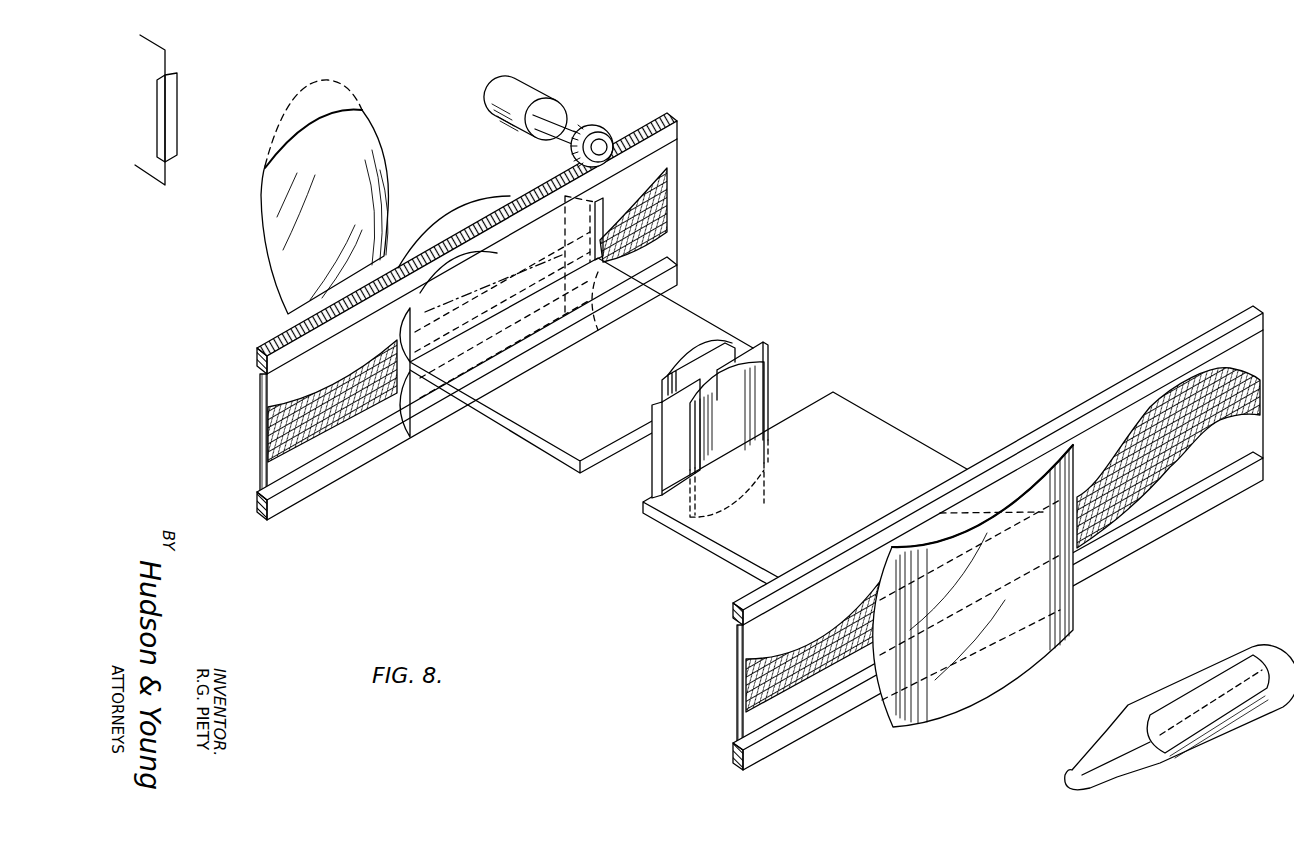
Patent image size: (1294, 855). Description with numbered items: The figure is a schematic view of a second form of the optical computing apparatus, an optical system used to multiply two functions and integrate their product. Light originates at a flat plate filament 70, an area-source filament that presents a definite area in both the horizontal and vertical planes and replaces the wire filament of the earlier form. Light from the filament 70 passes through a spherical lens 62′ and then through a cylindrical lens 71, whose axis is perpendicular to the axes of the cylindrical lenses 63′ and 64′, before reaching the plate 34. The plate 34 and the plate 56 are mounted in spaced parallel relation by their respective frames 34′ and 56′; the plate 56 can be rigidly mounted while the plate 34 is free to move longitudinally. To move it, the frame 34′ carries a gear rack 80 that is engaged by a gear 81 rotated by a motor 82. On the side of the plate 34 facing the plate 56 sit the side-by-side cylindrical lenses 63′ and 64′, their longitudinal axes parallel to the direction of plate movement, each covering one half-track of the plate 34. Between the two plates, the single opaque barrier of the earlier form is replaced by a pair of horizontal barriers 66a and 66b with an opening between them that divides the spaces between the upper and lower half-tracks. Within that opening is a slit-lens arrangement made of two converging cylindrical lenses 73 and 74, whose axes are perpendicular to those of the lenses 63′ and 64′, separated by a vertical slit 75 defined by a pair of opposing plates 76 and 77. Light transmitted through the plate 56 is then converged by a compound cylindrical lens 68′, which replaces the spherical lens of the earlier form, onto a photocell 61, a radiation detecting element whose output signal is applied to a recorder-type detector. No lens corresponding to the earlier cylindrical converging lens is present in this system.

The flat plate filament 70 is at (175, 110).
The spherical lens 62′ is at (375, 150).
The gear rack 80 is at (646, 124).
The frame 34′ is at (256, 371).
The plate 34 is at (272, 393).
The cylindrical lens 71 is at (468, 210).
The motor 82 is at (543, 84).
The gear 81 is at (592, 125).
The cylindrical lens 63′ is at (598, 218).
The cylindrical lens 64′ is at (423, 420).
The horizontal barrier 66a is at (537, 428).
The horizontal barrier 66b is at (889, 429).
The plate 76 is at (662, 460).
The vertical slit 75 is at (680, 368).
The converging cylindrical lens 73 is at (700, 346).
The plate 77 is at (763, 342).
The converging cylindrical lens 74 is at (755, 405).
The frame 56′ is at (735, 620).
The plate 56 is at (748, 650).
The compound cylindrical lens 68′ is at (1052, 643).
The photocell 61 is at (1212, 672).